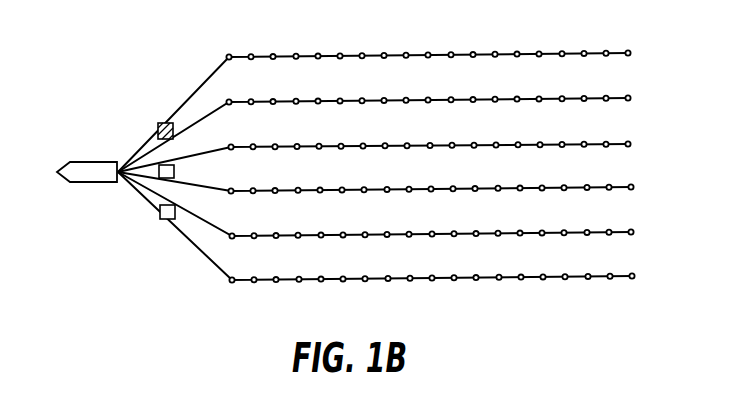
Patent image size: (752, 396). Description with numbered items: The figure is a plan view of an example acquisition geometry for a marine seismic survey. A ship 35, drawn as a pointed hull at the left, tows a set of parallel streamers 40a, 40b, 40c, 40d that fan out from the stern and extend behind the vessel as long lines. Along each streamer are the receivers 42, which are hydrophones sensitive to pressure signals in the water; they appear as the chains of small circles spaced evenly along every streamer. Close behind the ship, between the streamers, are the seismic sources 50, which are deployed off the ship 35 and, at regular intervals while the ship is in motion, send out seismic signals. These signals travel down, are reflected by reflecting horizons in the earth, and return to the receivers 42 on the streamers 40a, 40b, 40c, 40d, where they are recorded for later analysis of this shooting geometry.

The ship 35 is at (97, 162).
The streamer 40a is at (412, 86).
The streamer 40b is at (618, 97).
The streamer 40c is at (618, 143).
The streamer 40d is at (620, 186).
The receivers 42 is at (384, 55).
The seismic sources 50 is at (160, 123).